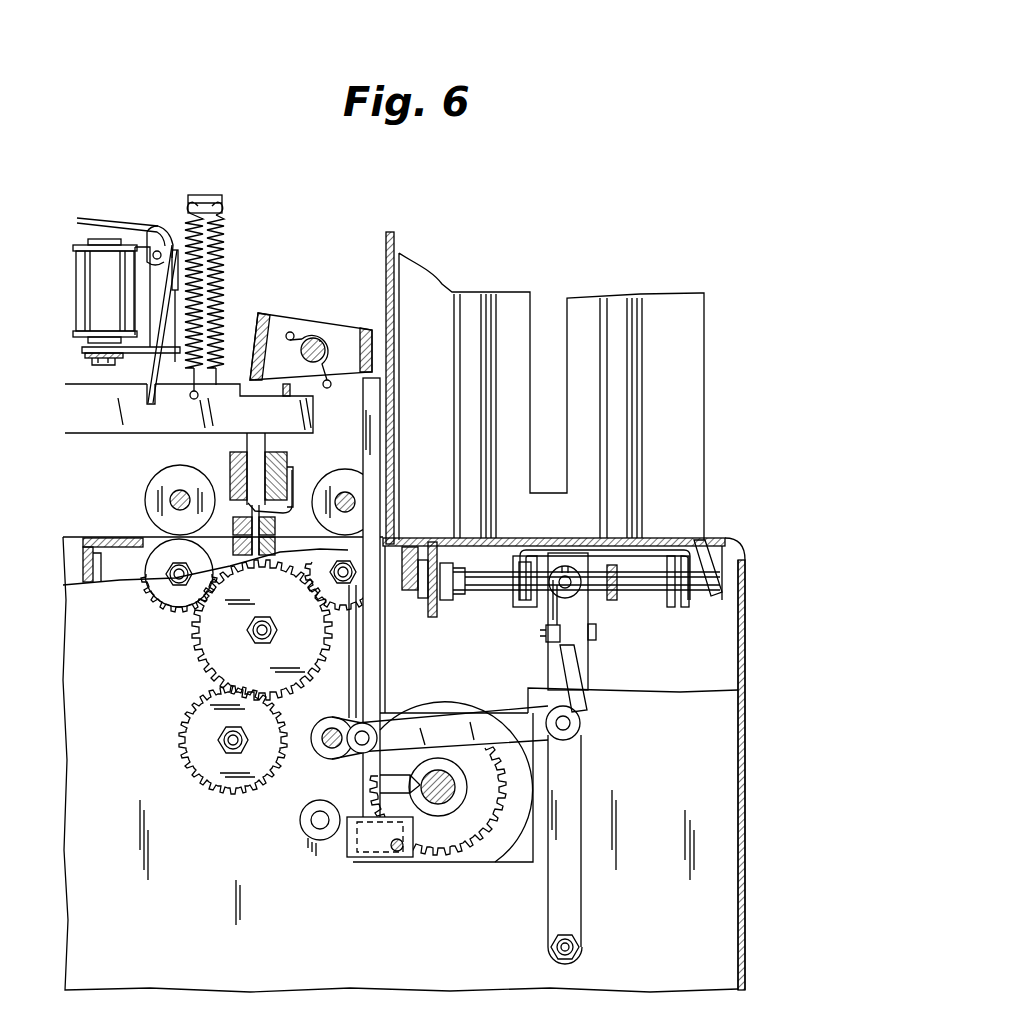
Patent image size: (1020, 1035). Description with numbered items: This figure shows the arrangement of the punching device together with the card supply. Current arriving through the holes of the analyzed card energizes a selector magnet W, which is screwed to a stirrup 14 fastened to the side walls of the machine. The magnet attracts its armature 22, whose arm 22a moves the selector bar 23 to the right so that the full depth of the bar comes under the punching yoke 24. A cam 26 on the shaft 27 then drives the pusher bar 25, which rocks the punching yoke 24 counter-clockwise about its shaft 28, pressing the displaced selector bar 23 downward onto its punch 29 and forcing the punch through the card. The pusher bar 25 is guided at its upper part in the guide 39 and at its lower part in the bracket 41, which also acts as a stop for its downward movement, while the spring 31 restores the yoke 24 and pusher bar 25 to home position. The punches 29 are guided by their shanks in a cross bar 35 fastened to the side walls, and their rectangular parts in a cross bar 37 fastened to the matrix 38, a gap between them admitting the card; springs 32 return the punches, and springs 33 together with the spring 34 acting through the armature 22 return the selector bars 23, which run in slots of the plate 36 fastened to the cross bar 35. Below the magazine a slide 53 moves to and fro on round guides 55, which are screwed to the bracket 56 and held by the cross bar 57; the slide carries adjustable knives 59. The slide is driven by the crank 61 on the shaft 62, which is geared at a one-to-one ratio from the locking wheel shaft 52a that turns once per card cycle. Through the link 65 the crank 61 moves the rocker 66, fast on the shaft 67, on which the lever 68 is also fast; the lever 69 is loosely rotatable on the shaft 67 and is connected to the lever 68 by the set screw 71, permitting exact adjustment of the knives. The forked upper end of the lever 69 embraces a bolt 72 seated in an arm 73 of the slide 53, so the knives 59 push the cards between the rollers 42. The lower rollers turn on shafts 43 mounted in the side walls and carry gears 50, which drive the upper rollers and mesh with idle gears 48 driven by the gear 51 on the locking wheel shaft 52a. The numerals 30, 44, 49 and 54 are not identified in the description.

The selector magnet W is at (95, 261).
The stirrup 14 is at (84, 350).
The armature 22 is at (115, 225).
The arm 22a is at (150, 392).
The selector bar 23 is at (170, 420).
The punching yoke 24 is at (283, 318).
The pusher bar 25 is at (373, 398).
The cam 26 is at (403, 795).
The shaft 27 is at (440, 790).
The shaft 28 is at (320, 342).
The punch 29 is at (254, 450).
The gear wheel 30 is at (495, 838).
The spring 31 is at (293, 330).
The spring 32 is at (293, 486).
The spring 33 is at (211, 210).
The spring 34 is at (181, 250).
The cross bar 35 is at (233, 470).
The plate 36 is at (283, 395).
The cross bar 37 is at (237, 520).
The matrix 38 is at (243, 556).
The guide 39 is at (396, 412).
The bracket 41 is at (368, 846).
The roller 42 is at (165, 550).
The shaft 43 is at (172, 580).
The pressure roller 44 is at (170, 500).
The idle gear 48 is at (225, 633).
The gear shaft 49 is at (270, 642).
The gear 50 is at (172, 598).
The gear 51 is at (222, 778).
The locking wheel shaft 52a is at (225, 745).
The slide 53 is at (585, 556).
The end plate 54 is at (670, 556).
The round guide 55 is at (645, 582).
The bracket 56 is at (433, 545).
The cross bar 57 is at (615, 596).
The knife 59 is at (713, 540).
The crank 61 is at (346, 760).
The shaft 62 is at (315, 758).
The link 65 is at (512, 722).
The rocker 66 is at (572, 915).
The shaft 67 is at (565, 963).
The lever 68 is at (573, 680).
The lever 69 is at (583, 623).
The set screw 71 is at (591, 641).
The bolt 72 is at (560, 590).
The arm 73 is at (560, 560).